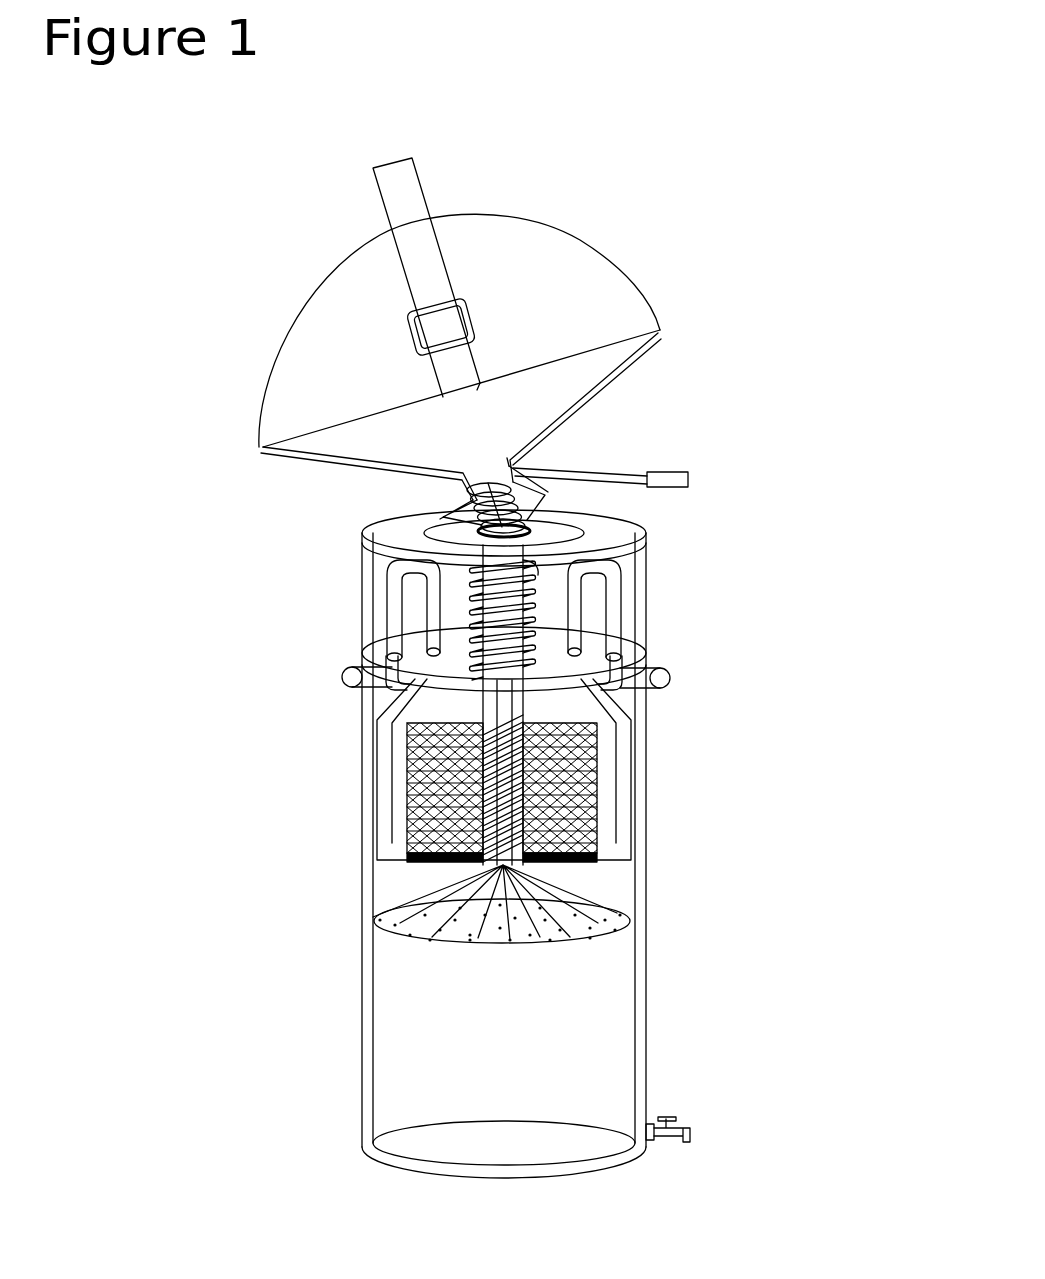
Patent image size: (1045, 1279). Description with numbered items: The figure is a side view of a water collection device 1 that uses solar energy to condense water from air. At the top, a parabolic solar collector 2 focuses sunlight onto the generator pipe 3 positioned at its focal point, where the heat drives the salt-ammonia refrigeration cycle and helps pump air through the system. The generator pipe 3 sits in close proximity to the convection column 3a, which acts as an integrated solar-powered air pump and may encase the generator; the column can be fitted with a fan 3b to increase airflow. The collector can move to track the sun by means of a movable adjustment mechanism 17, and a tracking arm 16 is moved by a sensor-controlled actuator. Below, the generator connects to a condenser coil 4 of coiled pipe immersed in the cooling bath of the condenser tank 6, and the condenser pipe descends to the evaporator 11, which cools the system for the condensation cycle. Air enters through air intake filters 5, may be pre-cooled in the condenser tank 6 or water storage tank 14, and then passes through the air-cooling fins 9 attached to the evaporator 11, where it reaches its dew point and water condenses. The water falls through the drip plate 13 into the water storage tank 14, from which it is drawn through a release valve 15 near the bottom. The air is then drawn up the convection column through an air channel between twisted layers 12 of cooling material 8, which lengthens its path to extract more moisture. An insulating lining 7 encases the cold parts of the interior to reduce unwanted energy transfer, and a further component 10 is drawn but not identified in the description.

The water collection device 1 is at (262, 272).
The parabolic solar collector 2 is at (380, 462).
The generator pipe 3 is at (480, 383).
The convection column 3a is at (397, 158).
The fan 3b is at (448, 322).
The condenser coil 4 is at (470, 605).
The air intake filters 5 is at (345, 672).
The condenser tank 6 is at (622, 630).
The lining 7 is at (362, 737).
The cooling material 8 is at (600, 778).
The air-cooling fins 9 is at (410, 788).
The right nozzle plate 10 is at (603, 855).
The evaporator 11 is at (490, 863).
The twisted layers 12 is at (507, 860).
The drip plate 13 is at (397, 913).
The water storage tank 14 is at (359, 1062).
The release valve 15 is at (683, 1122).
The tracking arm 16 is at (690, 477).
The movable adjustment mechanism 17 is at (525, 522).